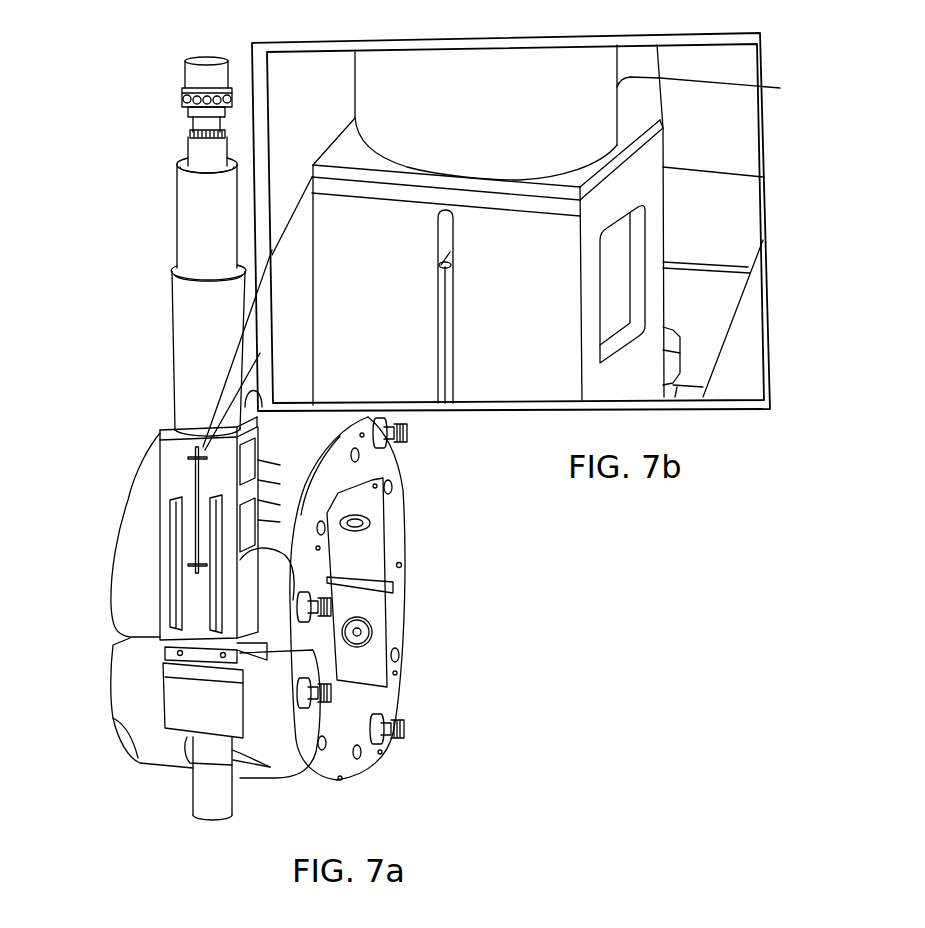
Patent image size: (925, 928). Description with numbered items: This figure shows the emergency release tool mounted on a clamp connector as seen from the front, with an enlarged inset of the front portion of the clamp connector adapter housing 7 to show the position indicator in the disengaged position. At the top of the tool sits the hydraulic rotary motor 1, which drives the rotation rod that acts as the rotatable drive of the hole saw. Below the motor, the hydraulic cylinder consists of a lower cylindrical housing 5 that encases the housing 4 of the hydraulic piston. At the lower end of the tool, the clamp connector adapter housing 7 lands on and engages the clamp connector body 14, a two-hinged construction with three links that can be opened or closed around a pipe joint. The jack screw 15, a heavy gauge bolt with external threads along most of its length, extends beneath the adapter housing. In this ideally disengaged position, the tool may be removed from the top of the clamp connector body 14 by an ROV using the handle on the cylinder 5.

In FIG. 7a, the hydraulic rotary motor 1 is at (207, 77).
In FIG. 7a, the housing of hydraulic piston 4 is at (203, 206).
In FIG. 7b, the lower cylindrical housing 5 is at (597, 110).
In FIG. 7a, the lower cylindrical housing 5 is at (205, 330).
In FIG. 7b, the clamp connector adapter housing 7 is at (563, 287).
In FIG. 7a, the clamp connector adapter housing 7 is at (180, 485).
In FIG. 7a, the clamp connector body 14 is at (440, 643).
In FIG. 7a, the jack screw 15 is at (207, 790).